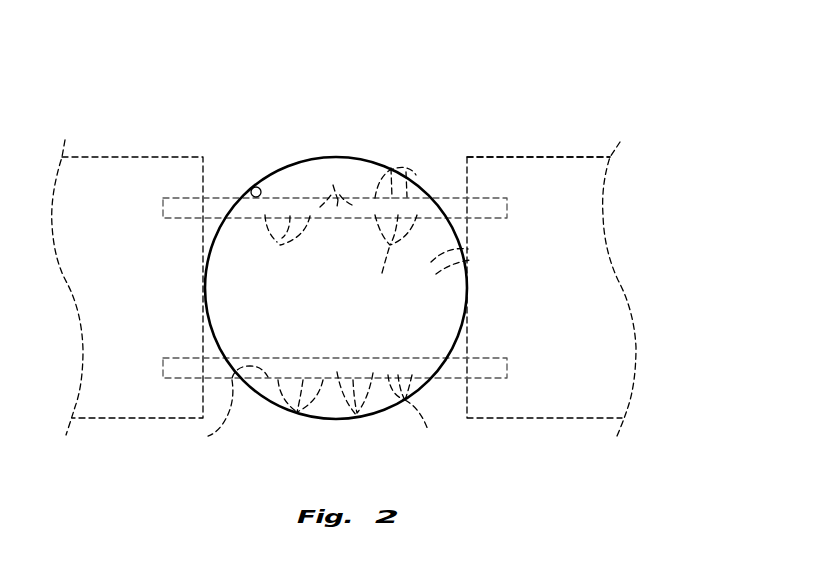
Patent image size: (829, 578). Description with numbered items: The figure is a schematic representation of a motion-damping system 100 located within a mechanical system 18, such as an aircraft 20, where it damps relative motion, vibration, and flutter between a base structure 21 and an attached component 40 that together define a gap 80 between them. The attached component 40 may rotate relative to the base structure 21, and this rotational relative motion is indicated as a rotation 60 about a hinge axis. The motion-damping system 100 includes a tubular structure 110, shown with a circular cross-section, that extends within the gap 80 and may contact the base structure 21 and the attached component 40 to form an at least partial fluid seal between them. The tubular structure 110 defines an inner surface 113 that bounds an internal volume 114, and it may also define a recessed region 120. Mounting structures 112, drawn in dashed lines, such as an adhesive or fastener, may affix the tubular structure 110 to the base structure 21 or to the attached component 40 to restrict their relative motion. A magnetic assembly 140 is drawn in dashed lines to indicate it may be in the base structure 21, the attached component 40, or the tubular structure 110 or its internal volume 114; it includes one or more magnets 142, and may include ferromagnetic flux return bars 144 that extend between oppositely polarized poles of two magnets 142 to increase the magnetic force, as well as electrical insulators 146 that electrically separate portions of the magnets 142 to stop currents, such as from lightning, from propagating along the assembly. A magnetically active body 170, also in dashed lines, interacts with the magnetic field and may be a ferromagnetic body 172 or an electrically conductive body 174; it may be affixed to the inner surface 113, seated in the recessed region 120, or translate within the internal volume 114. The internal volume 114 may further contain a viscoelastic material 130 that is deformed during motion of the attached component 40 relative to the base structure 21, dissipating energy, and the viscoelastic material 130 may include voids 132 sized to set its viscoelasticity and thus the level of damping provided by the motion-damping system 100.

The mechanical system 18 is at (576, 43).
The aircraft 20 is at (577, 101).
The base structure 21 is at (548, 168).
The attached component 40 is at (116, 166).
The rotation 60 is at (607, 106).
The gap 80 is at (253, 473).
The motion-damping system 100 is at (285, 93).
The tubular structure 110 is at (267, 178).
The mounting structure 112 is at (203, 290).
The inner surface 113 is at (252, 190).
The internal volume 114 is at (306, 190).
The recessed region 120 is at (223, 407).
The viscoelastic material 130 is at (430, 318).
The voids 132 is at (425, 247).
The magnetic assembly 140 is at (396, 176).
The magnets 142 is at (333, 188).
The ferromagnetic flux return bars 144 is at (279, 246).
The electrical insulators 146 is at (390, 255).
The magnetically active body 170 is at (299, 412).
The ferromagnetic body 172 is at (358, 417).
The electrically conductive body 174 is at (419, 414).